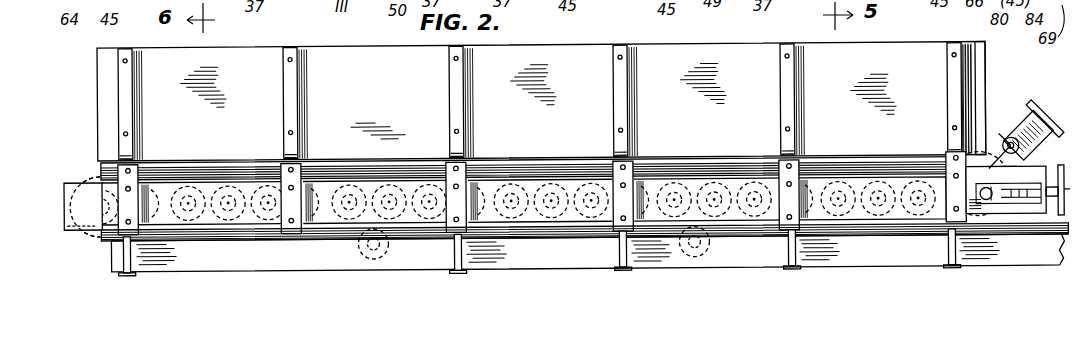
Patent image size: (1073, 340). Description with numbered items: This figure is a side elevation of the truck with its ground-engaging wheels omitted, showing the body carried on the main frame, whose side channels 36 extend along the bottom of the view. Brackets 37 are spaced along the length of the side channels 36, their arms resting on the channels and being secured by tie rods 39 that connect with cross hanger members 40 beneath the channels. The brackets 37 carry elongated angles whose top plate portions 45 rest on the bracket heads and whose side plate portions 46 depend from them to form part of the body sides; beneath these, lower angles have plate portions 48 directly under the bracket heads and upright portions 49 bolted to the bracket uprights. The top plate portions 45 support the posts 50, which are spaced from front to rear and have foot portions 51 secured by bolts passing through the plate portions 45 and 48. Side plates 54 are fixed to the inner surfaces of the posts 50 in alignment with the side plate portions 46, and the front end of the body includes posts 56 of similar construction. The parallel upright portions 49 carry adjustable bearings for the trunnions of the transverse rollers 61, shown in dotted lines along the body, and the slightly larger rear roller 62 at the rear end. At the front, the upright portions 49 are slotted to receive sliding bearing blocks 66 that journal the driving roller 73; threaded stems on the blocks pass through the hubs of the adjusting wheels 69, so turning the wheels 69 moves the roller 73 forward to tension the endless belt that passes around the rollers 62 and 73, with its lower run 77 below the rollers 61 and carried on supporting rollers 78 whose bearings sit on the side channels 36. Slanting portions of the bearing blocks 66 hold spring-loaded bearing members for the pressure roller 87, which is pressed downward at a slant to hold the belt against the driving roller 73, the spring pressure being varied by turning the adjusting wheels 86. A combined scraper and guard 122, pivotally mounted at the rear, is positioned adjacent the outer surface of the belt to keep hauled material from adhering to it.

The side channels 36 is at (589, 253).
The brackets 37 is at (288, 232).
The tie rods 39 is at (617, 249).
The cross hanger members 40 is at (618, 263).
The top plate portions 45 is at (106, 160).
The side plate portions 46 is at (178, 166).
The plate portions 48 is at (331, 166).
The upright portions 49 is at (76, 183).
The posts 50 is at (283, 75).
The foot portions 51 is at (285, 155).
The side plates 54 is at (100, 96).
The front end posts 56 is at (986, 89).
The rollers 61 is at (206, 192).
The rear roller 62 is at (86, 232).
The bearing blocks 66 is at (986, 222).
The adjusting wheels 69 is at (1061, 186).
The driving roller 73 is at (948, 250).
The lower run 77 is at (110, 240).
The supporting rollers 78 is at (381, 238).
The adjusting wheels 86 is at (1034, 114).
The pressure roller 87 is at (1000, 152).
The combined scraper and guard 122 is at (64, 208).